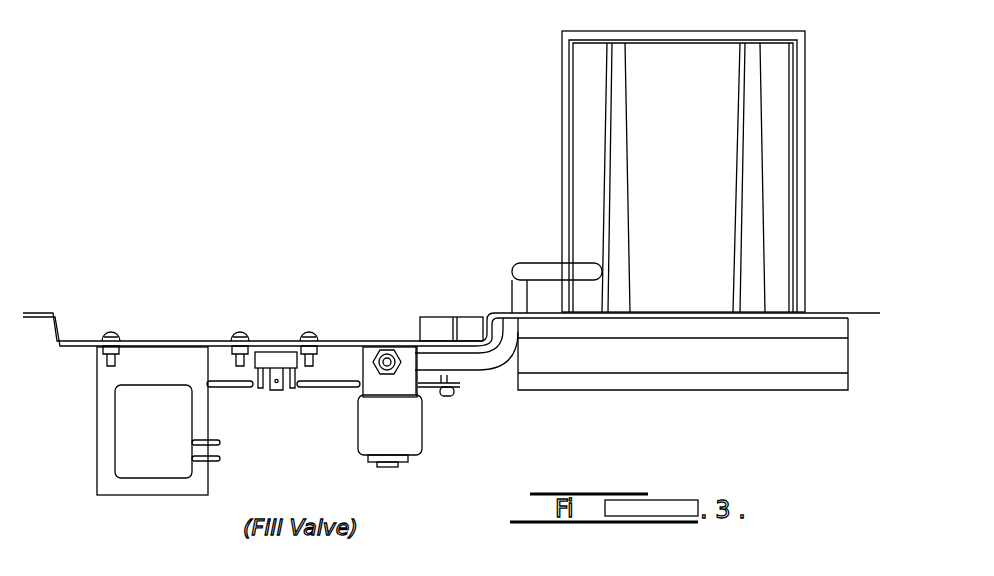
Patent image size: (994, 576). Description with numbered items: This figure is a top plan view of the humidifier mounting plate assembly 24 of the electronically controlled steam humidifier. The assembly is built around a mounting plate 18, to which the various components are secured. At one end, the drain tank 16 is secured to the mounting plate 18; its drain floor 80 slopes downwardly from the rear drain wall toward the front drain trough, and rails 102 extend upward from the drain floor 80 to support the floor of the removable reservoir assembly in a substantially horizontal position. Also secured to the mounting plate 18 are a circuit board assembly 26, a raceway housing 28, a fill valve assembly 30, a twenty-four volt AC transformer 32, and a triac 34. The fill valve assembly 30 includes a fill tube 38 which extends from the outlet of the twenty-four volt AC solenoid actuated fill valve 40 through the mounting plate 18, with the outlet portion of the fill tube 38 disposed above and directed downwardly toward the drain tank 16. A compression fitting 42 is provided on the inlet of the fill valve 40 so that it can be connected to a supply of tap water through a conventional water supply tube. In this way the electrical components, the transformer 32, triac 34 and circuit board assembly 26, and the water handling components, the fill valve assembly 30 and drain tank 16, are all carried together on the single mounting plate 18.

The drain tank 16 is at (801, 78).
The rails 102 is at (610, 112).
The drain floor 80 is at (780, 218).
The fill tube 38 is at (535, 266).
The raceway housing 28 is at (718, 372).
The mounting plate 18 is at (75, 341).
The mounting plate assembly 24 is at (338, 338).
The triac 34 is at (268, 340).
The compression fitting 42 is at (393, 340).
The fill valve 40 is at (365, 432).
The fill valve assembly 30 is at (358, 456).
The circuit board assembly 26 is at (462, 390).
The transformer 32 is at (140, 497).